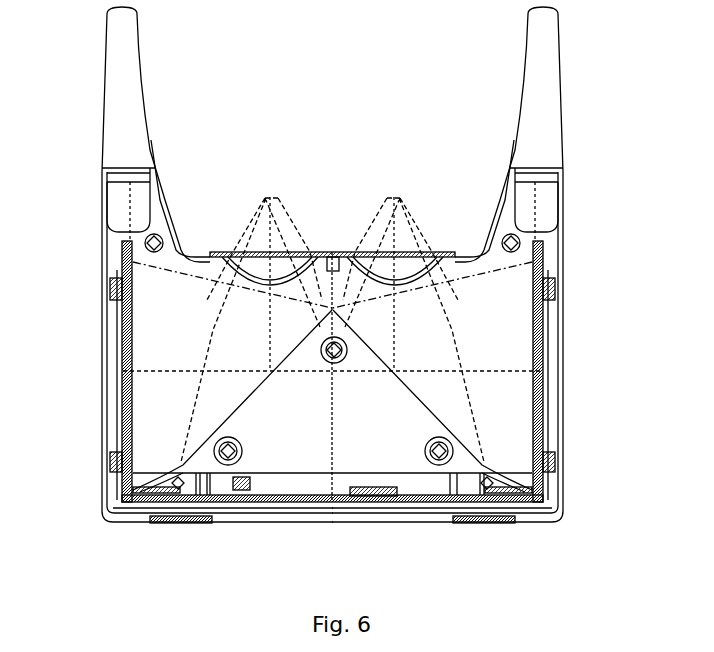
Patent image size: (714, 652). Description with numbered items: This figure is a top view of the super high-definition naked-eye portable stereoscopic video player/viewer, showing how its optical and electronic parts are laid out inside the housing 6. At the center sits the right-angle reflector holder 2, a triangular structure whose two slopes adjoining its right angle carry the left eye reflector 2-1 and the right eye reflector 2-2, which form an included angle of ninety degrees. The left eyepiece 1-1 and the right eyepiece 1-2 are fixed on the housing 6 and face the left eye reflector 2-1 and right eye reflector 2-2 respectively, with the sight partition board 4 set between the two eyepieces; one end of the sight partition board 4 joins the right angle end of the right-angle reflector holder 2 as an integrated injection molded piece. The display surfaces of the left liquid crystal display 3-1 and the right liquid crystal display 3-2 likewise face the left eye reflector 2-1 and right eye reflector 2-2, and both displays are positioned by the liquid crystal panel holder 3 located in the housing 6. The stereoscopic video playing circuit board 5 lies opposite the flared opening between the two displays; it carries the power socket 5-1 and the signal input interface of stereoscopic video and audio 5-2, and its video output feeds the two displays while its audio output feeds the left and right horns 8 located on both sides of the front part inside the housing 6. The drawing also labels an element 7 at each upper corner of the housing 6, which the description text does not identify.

The left eyepiece 1-1 is at (262, 250).
The right eyepiece 1-2 is at (395, 255).
The right-angle reflector holder 2 is at (302, 448).
The left eye reflector 2-1 is at (253, 388).
The right eye reflector 2-2 is at (416, 397).
The liquid crystal panel holder 3 is at (122, 391).
The left liquid crystal display 3-1 is at (122, 334).
The right liquid crystal display 3-2 is at (540, 342).
The sight partition board 4 is at (332, 305).
The stereoscopic video playing circuit board 5 is at (425, 498).
The power socket 5-1 is at (232, 490).
The signal input interface of stereoscopic video and audio 5-2 is at (376, 503).
The housing 6 is at (533, 525).
The mounting bracket 7 is at (121, 210).
The left and right horns 8 is at (122, 75).